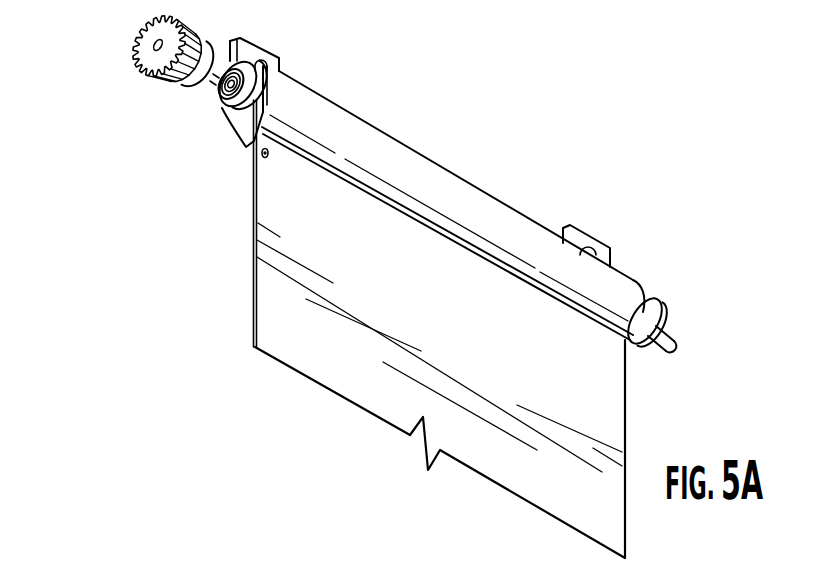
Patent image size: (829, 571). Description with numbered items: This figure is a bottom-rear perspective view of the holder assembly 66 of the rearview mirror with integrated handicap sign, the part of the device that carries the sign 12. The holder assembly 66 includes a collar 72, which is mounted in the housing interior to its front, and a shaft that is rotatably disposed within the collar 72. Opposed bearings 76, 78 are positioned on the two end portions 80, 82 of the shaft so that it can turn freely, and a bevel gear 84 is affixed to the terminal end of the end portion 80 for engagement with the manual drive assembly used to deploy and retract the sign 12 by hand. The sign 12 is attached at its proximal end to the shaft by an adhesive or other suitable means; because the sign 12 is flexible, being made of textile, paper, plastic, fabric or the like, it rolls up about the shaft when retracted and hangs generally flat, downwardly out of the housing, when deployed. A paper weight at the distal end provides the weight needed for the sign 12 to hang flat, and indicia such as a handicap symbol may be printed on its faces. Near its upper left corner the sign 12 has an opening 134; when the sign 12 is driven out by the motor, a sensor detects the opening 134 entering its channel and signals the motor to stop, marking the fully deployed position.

The sign 12 is at (255, 280).
The holder assembly 66 is at (609, 101).
The collar 72 is at (442, 183).
The bearing 76 is at (220, 110).
The bearing 78 is at (657, 307).
The end portion 80 is at (206, 84).
The end portion 82 is at (672, 337).
The bevel gear 84 is at (147, 75).
The opening 134 is at (262, 158).